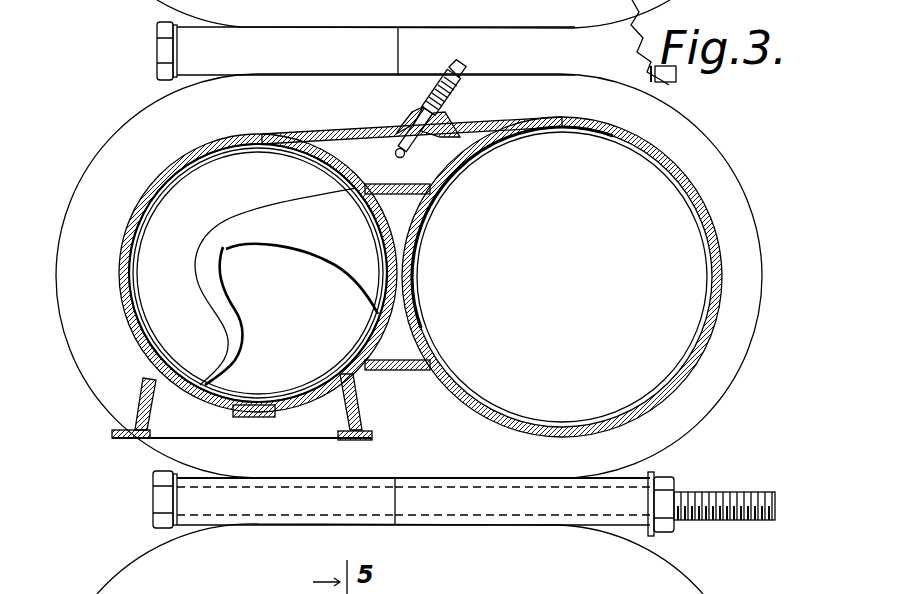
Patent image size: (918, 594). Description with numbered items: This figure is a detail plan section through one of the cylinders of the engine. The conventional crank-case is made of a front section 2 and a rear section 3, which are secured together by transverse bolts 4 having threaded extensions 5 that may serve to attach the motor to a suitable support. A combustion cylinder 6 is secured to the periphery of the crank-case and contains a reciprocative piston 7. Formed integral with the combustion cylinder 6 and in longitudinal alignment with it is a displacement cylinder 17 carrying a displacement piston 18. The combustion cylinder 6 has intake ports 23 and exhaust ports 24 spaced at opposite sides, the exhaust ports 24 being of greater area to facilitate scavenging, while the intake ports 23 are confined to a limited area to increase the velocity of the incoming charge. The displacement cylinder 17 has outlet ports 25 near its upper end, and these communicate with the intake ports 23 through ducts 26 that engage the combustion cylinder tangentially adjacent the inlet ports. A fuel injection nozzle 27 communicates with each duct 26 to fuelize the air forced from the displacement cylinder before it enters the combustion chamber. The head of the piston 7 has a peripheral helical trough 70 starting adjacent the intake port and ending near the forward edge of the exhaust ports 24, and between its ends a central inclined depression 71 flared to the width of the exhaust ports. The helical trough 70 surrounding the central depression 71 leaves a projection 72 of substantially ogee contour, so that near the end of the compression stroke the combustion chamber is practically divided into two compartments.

The front section 2 is at (293, 498).
The rear section 3 is at (490, 498).
The transverse bolts 4 is at (157, 43).
The threaded extensions 5 is at (732, 487).
The combustion cylinders 6 is at (126, 342).
The piston 7 is at (150, 290).
The displacement cylinders 17 is at (725, 297).
The displacement pistons 18 is at (505, 378).
The intake ports 23 is at (308, 150).
The exhaust ports 24 is at (286, 412).
The outlet ports 25 is at (476, 153).
The ducts 26 is at (378, 153).
The fuel injection nozzle 27 is at (407, 154).
The helical trough 70 is at (168, 218).
The central inclined depression 71 is at (292, 302).
The projection 72 is at (234, 250).